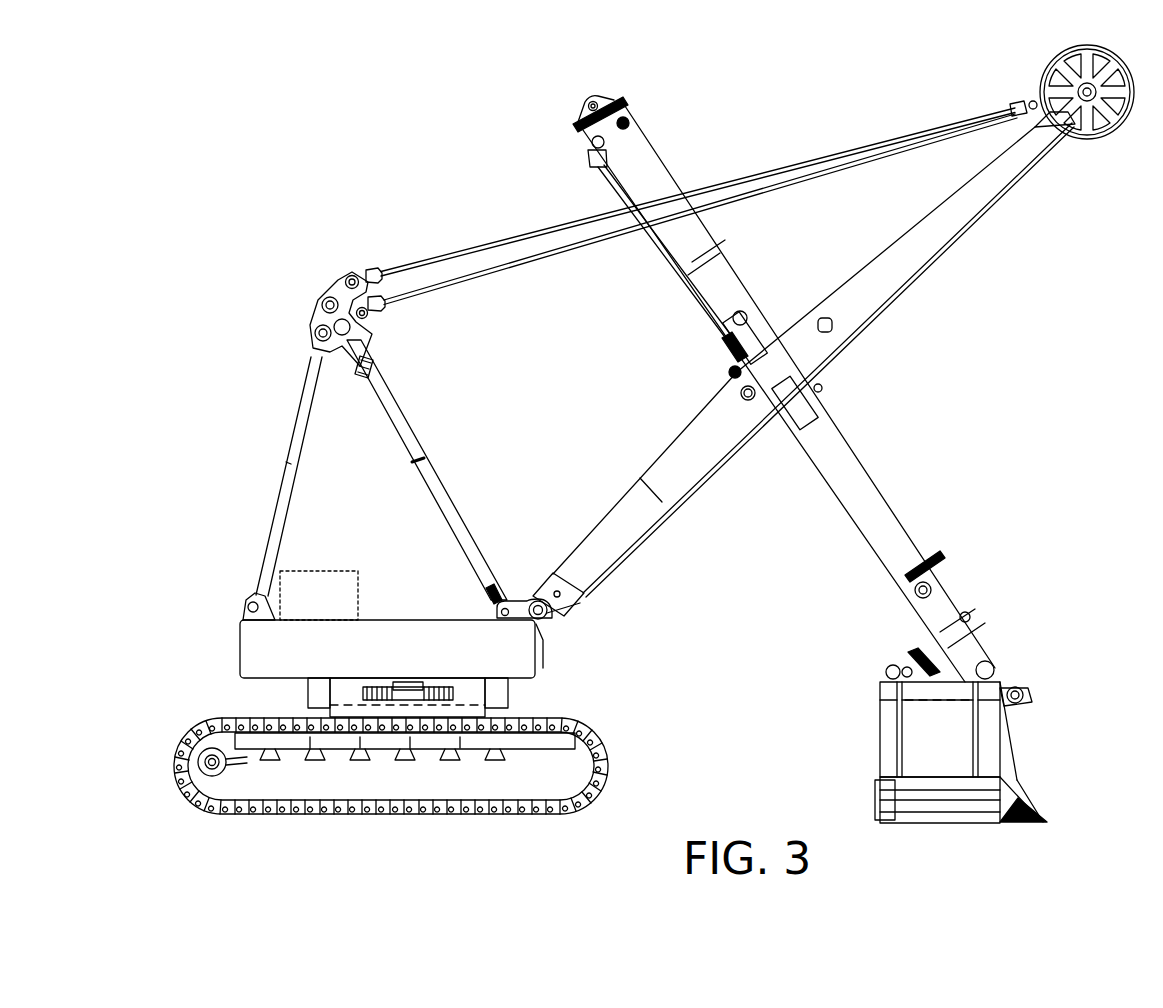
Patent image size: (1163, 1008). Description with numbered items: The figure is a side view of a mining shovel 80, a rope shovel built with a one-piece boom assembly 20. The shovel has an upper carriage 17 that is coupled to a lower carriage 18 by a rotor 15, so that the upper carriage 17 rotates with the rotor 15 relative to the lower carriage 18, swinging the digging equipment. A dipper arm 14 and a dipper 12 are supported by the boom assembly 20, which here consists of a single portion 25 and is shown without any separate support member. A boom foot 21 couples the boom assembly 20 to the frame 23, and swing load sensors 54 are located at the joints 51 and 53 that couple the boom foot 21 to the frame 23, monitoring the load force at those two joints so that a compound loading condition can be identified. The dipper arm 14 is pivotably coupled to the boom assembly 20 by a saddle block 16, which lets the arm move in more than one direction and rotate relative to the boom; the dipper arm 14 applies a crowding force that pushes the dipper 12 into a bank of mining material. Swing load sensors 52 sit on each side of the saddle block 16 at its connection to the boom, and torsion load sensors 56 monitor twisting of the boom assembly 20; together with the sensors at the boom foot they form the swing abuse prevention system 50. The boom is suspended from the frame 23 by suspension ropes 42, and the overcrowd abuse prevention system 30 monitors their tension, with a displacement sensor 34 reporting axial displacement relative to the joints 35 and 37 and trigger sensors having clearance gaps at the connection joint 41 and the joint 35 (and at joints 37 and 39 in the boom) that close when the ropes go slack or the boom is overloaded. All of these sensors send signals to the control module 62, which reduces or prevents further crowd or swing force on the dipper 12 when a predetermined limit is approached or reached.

The dipper 12 is at (1007, 757).
The dipper arm 14 is at (878, 505).
The rotor 15 is at (498, 692).
The saddle block 16 is at (797, 425).
The upper carriage 17 is at (183, 408).
The lower carriage 18 is at (600, 756).
The boom assembly 20 is at (815, 363).
The boom foot 21 is at (575, 605).
The frame 23 is at (388, 630).
The single portion 25 is at (887, 262).
The overcrowd abuse prevention system 30 is at (222, 595).
The displacement sensor 34 is at (523, 236).
The joint 35 is at (372, 320).
The joint 37 is at (740, 393).
The joint 39 is at (243, 606).
The connection joint 41 is at (350, 277).
The suspension ropes 42 is at (787, 166).
The swing abuse prevention system 50 is at (247, 567).
The joint 51 is at (562, 551).
The joint 53 is at (558, 590).
The swing load sensor 52 is at (728, 368).
The swing load sensor 54 is at (537, 598).
The torsion load sensor 56 is at (655, 490).
The control module 62 is at (330, 579).
The mining shovel 80 is at (348, 135).